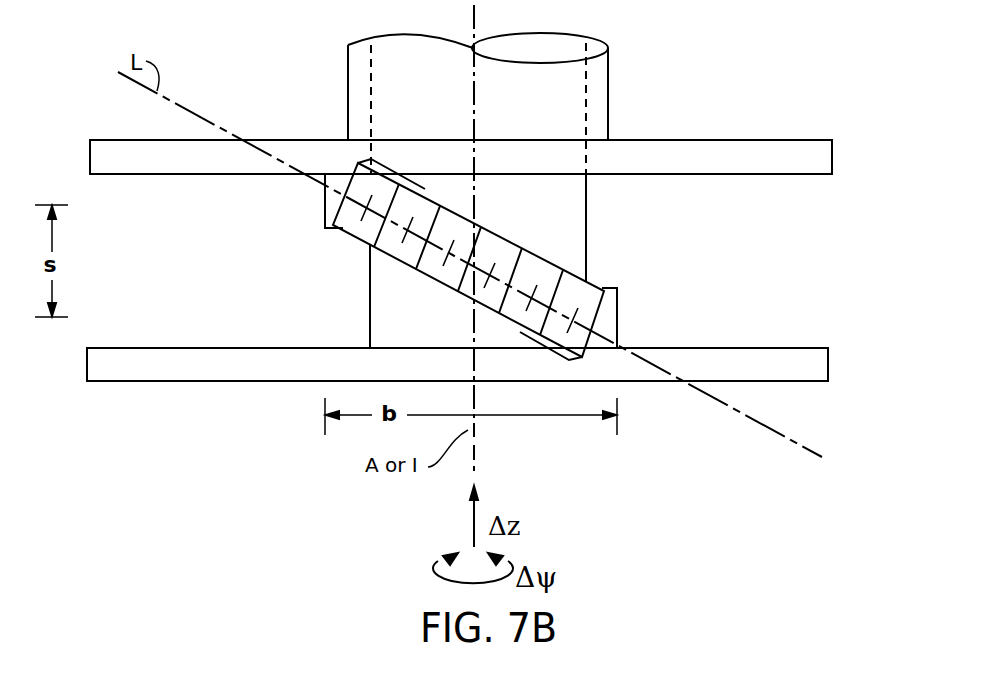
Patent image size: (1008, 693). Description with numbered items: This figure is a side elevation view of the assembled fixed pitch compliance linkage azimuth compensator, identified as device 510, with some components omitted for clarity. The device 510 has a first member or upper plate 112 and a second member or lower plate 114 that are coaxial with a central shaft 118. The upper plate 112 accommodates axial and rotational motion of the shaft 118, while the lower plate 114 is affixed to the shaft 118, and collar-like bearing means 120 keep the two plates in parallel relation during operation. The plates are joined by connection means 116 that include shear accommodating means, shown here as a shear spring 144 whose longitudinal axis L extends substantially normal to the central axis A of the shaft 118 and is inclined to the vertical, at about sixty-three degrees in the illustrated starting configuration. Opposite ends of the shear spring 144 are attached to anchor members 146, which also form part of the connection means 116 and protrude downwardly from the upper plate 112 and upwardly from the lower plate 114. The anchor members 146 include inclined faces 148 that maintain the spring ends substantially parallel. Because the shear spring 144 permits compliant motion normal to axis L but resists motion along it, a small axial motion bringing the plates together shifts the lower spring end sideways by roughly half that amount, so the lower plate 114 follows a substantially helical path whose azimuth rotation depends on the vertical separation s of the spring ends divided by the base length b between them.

The first member 112 is at (818, 160).
The second member 114 is at (815, 366).
The connection means 116 is at (786, 269).
The central shaft 118 is at (560, 231).
The collar-like bearing means 120 is at (608, 83).
The shear spring 144 is at (366, 244).
The anchor members 146 is at (325, 200).
The inclined faces 148 is at (342, 236).
The azimuth compensation device 510 is at (915, 227).